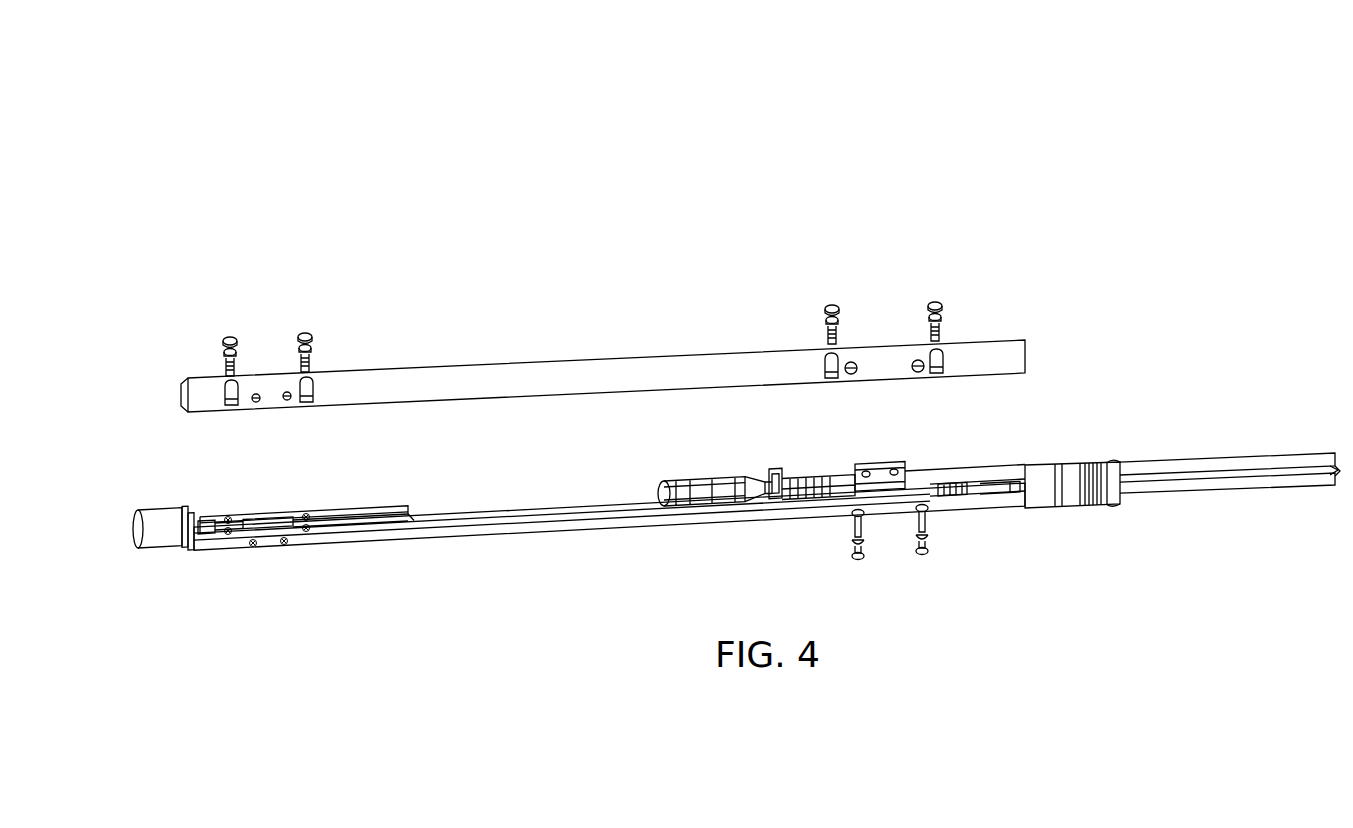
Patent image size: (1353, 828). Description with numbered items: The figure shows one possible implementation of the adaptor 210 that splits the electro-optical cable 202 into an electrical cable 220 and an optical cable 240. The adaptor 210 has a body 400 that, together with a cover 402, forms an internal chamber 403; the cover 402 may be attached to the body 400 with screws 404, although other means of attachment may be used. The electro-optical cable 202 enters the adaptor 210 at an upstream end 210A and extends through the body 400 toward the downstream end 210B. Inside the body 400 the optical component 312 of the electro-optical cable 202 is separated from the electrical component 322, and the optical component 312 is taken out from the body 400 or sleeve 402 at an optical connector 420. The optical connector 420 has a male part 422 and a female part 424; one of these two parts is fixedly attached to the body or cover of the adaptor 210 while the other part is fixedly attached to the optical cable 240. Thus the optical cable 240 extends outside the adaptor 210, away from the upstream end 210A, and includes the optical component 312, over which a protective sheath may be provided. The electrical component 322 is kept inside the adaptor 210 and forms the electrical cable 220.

The adaptor 210 is at (1181, 106).
The upstream end 210A is at (157, 548).
The downstream end 210B is at (1103, 505).
The electro-optical cable 202 is at (355, 518).
The electrical cable 220 is at (1245, 490).
The optical cable 240 is at (1160, 462).
The optical component 312 is at (800, 478).
The electrical component 322 is at (1005, 495).
The body 400 is at (443, 537).
The cover 402 is at (507, 378).
The internal chamber 403 is at (542, 508).
The screws 404 is at (306, 335).
The optical connector 420 is at (240, 157).
The male part 422 is at (702, 482).
The female part 424 is at (745, 483).